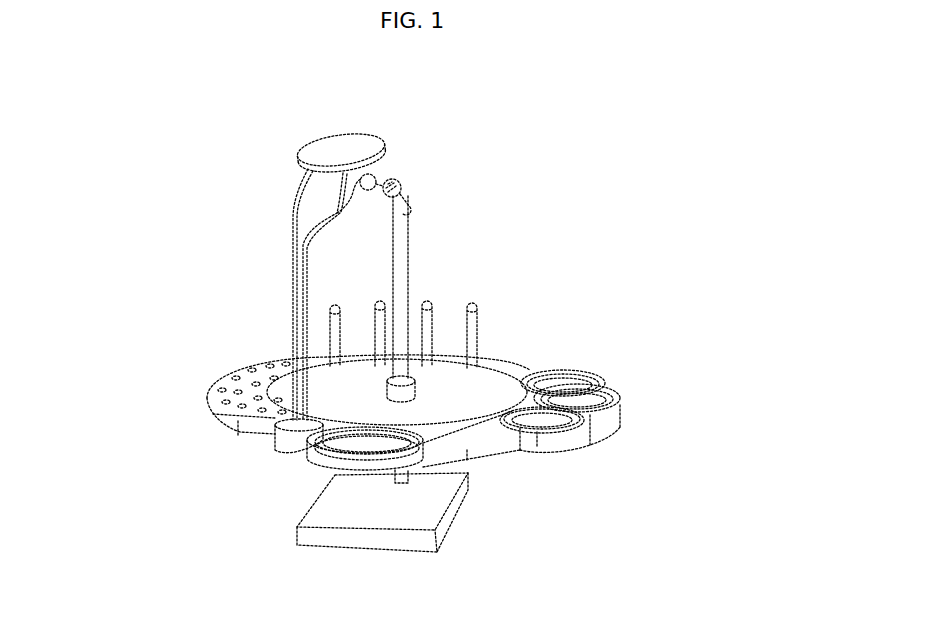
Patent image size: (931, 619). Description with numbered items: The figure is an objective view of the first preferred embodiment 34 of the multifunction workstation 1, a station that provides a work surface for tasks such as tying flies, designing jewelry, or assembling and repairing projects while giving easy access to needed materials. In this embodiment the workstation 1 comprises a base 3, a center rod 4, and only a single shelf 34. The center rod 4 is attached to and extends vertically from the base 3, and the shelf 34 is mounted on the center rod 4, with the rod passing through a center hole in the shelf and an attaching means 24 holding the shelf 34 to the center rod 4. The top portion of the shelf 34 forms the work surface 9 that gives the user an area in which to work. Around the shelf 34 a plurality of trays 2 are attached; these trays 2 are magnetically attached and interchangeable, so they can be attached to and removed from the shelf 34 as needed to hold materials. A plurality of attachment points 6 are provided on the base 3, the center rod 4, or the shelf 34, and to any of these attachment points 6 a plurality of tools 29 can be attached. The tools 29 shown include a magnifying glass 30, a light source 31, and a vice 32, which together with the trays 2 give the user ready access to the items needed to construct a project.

The multifunction workstation 1 is at (516, 345).
The first preferred embodiment / shelf 34 is at (736, 137).
The plurality of trays 2 is at (448, 364).
The base 3 is at (371, 530).
The center rod 4 is at (398, 263).
The plurality of attachment points 6 is at (403, 213).
The work surface 9 is at (336, 380).
The attaching means 24 is at (401, 388).
The plurality of tools 29 is at (491, 140).
The vice 32 is at (404, 180).
The magnifying glass 30 is at (322, 148).
The light source 31 is at (377, 177).